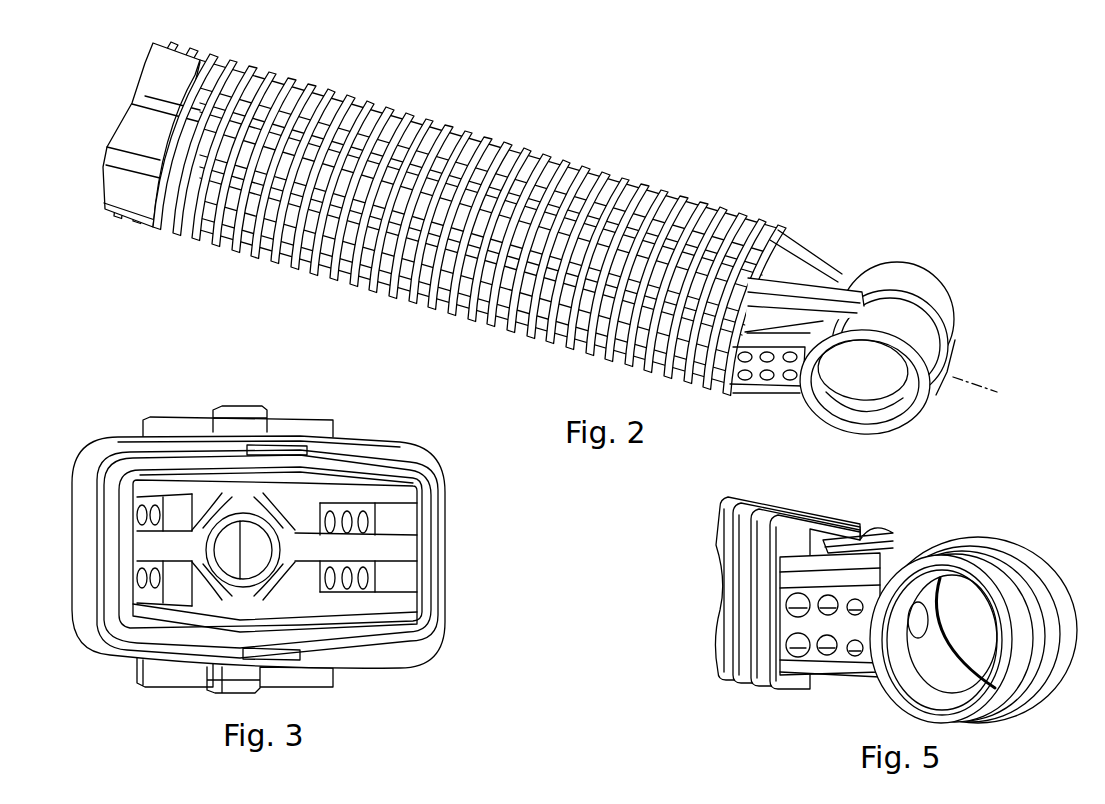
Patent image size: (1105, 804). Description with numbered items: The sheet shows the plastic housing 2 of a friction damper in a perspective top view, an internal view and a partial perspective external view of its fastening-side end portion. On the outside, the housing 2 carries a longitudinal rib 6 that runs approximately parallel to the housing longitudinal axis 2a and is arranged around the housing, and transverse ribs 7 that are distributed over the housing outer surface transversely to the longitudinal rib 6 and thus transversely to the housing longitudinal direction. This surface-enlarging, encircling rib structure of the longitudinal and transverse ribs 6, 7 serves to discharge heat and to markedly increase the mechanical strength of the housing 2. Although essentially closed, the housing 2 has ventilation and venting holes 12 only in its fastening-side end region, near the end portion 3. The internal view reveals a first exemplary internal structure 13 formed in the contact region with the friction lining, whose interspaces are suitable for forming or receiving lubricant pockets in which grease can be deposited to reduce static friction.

In FIG. 2, the housing 2 is at (568, 254).
In FIG. 3, the housing 2 is at (283, 520).
In FIG. 5, the housing 2 is at (896, 594).
In FIG. 2, the housing longitudinal axis 2a is at (987, 387).
In FIG. 2, the plug connector ring 3 is at (933, 247).
In FIG. 5, the plug connector ring 3 is at (973, 630).
In FIG. 2, the longitudinal rib 6 is at (802, 287).
In FIG. 3, the longitudinal rib 6 is at (242, 422).
In FIG. 5, the longitudinal rib 6 is at (892, 555).
In FIG. 2, the transverse ribs 7 is at (686, 188).
In FIG. 3, the transverse ribs 7 is at (420, 447).
In FIG. 5, the transverse ribs 7 is at (873, 528).
In FIG. 2, the ventilation and venting holes 12 is at (773, 403).
In FIG. 5, the ventilation and venting holes 12 is at (800, 657).
In FIG. 3, the internal structure 13 is at (404, 526).